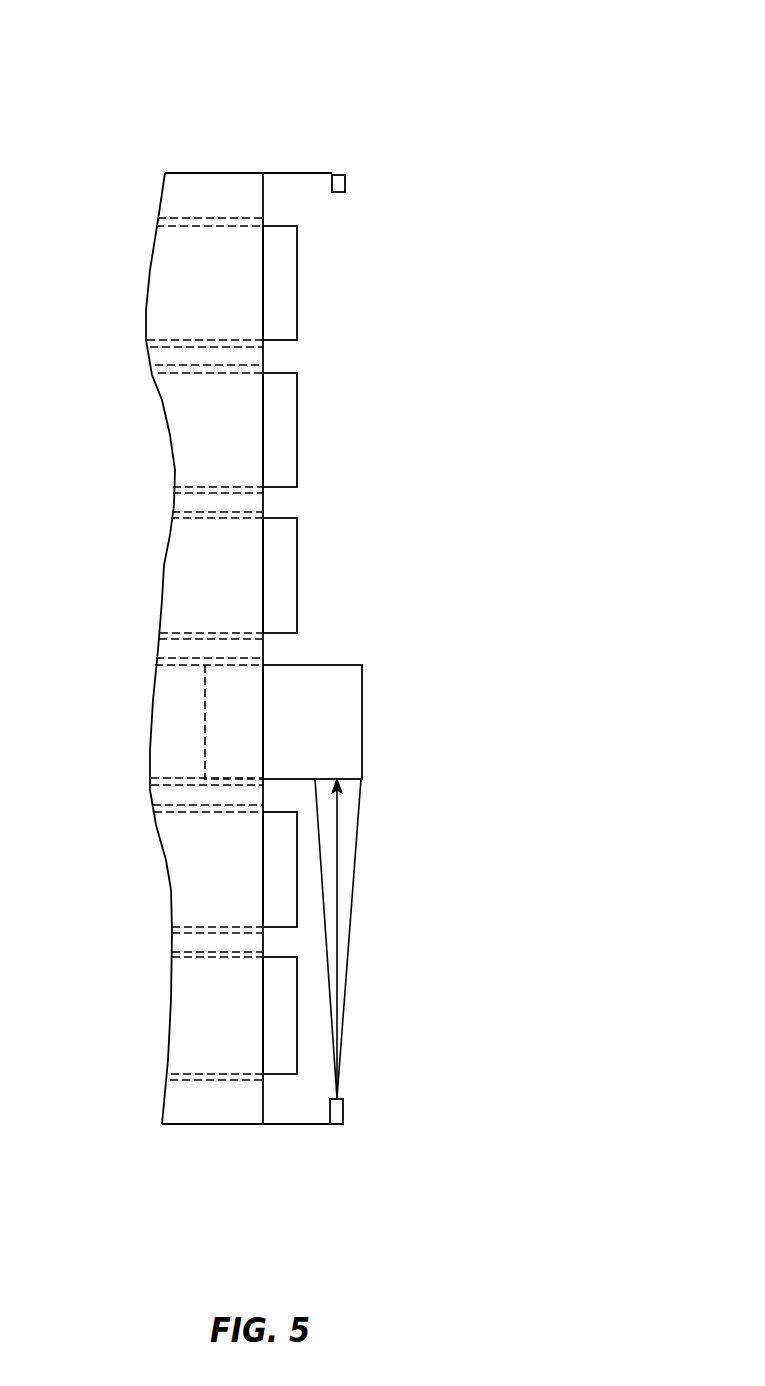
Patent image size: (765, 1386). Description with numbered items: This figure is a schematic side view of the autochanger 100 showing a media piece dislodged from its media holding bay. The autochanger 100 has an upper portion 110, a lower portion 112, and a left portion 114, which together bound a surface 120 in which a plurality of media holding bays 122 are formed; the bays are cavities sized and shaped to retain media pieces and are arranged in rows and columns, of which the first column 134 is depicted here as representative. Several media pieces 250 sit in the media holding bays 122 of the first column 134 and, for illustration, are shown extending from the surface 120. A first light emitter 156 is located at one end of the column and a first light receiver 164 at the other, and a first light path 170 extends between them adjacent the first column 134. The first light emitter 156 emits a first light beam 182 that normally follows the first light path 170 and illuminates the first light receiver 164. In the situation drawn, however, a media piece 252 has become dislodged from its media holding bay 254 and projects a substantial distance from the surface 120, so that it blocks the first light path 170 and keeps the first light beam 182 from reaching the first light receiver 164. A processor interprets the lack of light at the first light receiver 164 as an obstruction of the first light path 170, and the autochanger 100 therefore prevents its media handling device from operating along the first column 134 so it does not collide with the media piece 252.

The autochanger 100 is at (495, 60).
The upper portion 110 is at (203, 173).
The lower portion 112 is at (220, 1124).
The left portion 114 is at (211, 609).
The surface 120 is at (297, 940).
The media holding bays 122 is at (193, 407).
The first column 134 is at (283, 212).
The first light emitter 156 is at (343, 1116).
The first light receiver 164 is at (345, 183).
The first light path 170 is at (337, 884).
The first light beam 182 is at (357, 830).
The media pieces 250 is at (297, 458).
The dislodged media piece 252 is at (362, 722).
The media holding bay 254 is at (183, 722).